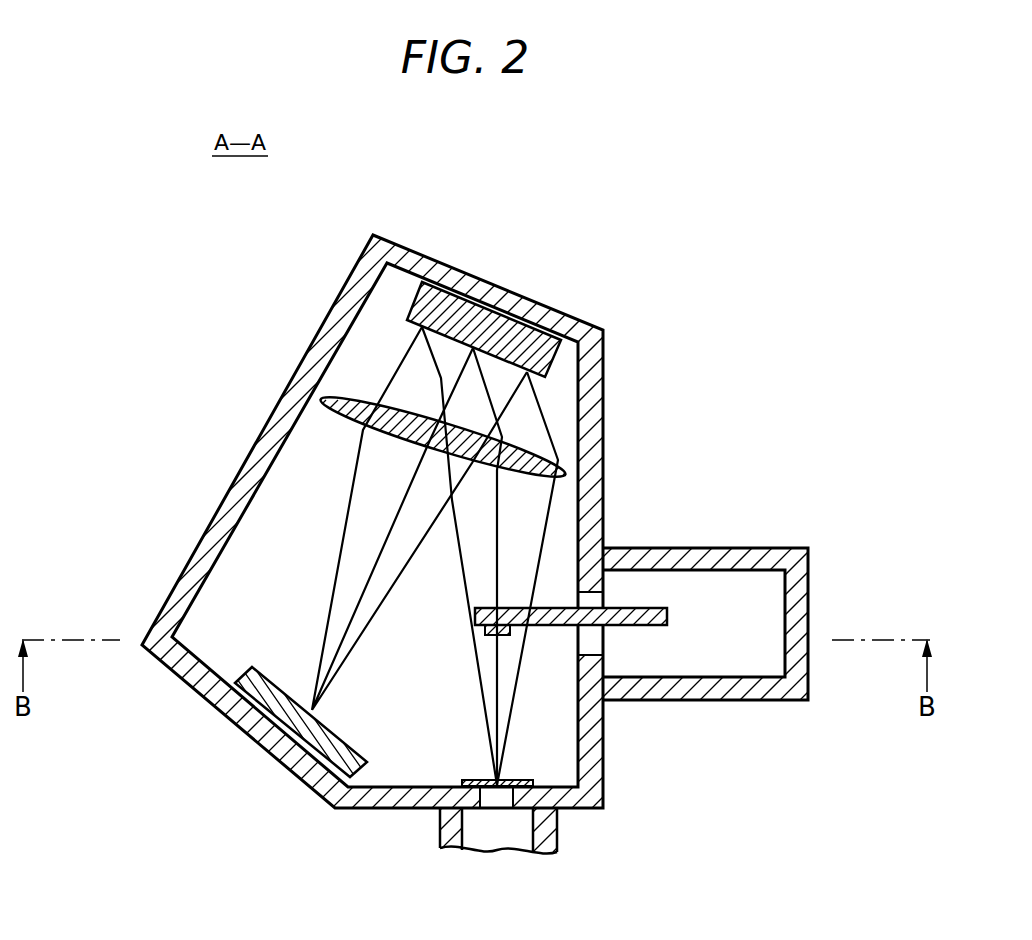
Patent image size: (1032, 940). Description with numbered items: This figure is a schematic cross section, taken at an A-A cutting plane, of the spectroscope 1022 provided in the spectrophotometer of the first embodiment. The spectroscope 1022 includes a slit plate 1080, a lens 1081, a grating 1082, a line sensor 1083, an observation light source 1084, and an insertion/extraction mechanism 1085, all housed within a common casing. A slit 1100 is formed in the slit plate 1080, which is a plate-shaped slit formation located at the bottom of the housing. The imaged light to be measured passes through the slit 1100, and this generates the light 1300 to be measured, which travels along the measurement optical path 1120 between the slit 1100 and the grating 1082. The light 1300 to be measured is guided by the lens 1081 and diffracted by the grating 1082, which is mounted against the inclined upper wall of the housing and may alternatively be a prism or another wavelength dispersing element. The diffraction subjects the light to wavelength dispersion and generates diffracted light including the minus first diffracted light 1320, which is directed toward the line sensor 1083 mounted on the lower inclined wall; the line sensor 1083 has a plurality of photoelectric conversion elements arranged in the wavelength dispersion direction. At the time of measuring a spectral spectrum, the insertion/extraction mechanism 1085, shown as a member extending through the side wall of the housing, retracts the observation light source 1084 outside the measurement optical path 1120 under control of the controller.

The spectroscope 1022 is at (744, 195).
The slit plate 1080 is at (516, 778).
The lens 1081 is at (352, 428).
The grating 1082 is at (414, 300).
The line sensor 1083 is at (241, 674).
The observation light source 1084 is at (492, 636).
The insertion/extraction mechanism 1085 is at (637, 626).
The slit 1100 is at (493, 792).
The measurement optical path 1120 is at (484, 718).
The light to be measured 1300 is at (487, 735).
The minus first diffracted light 1320 is at (336, 557).